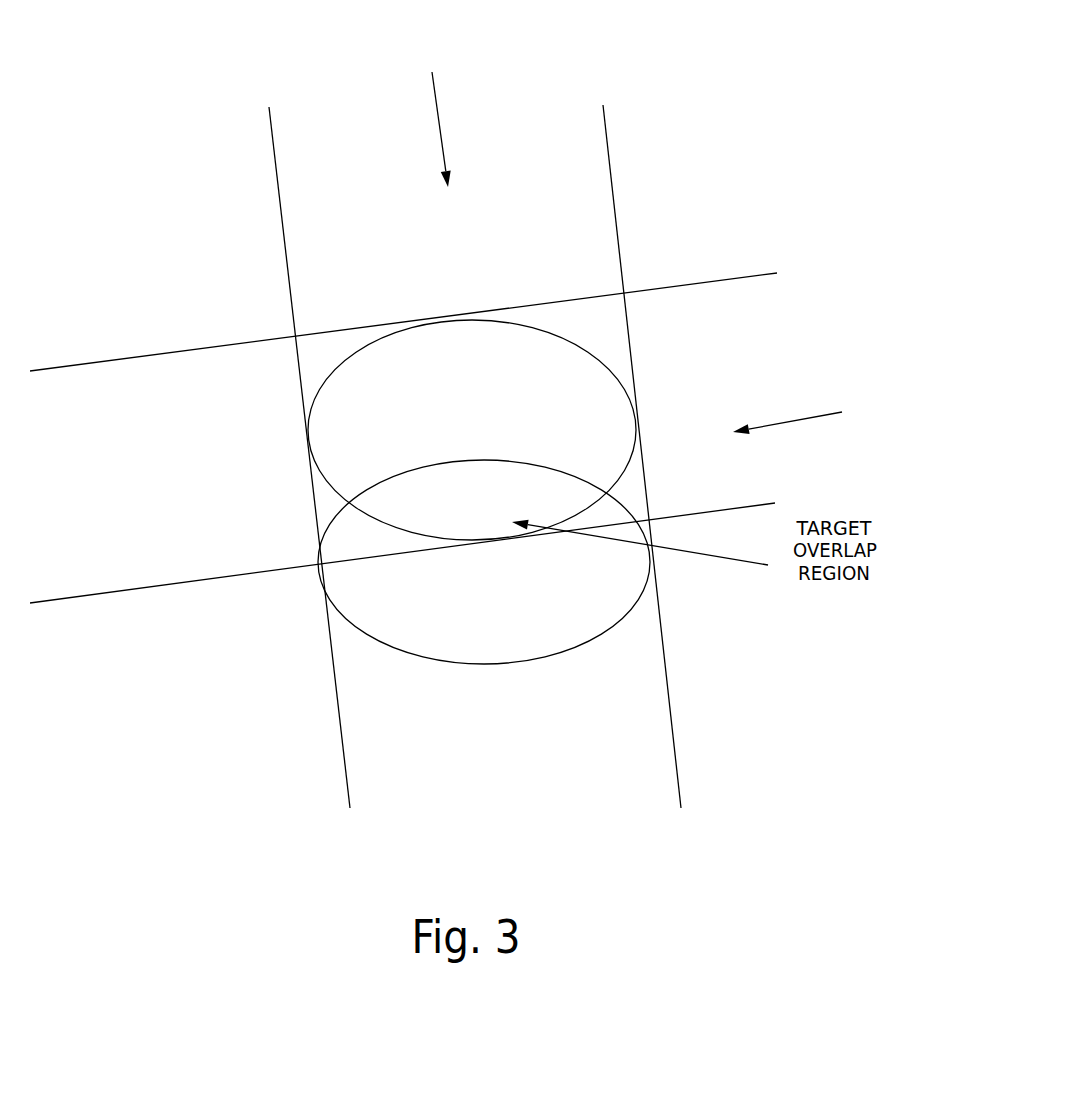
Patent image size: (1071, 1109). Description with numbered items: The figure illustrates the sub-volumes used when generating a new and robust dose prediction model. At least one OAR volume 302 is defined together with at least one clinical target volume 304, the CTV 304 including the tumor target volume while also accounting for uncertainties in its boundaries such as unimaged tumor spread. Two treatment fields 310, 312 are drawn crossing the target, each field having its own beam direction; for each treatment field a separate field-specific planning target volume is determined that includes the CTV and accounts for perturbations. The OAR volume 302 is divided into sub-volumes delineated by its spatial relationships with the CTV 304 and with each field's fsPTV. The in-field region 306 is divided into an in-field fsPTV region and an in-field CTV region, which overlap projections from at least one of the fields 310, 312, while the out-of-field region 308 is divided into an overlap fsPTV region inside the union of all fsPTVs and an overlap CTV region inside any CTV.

The OAR volume 302 is at (599, 606).
The clinical target volume 304 is at (458, 352).
The in-field region 306 is at (614, 502).
The out-of-field region 308 is at (397, 621).
The treatment field 310 is at (534, 745).
The treatment field 312 is at (152, 453).